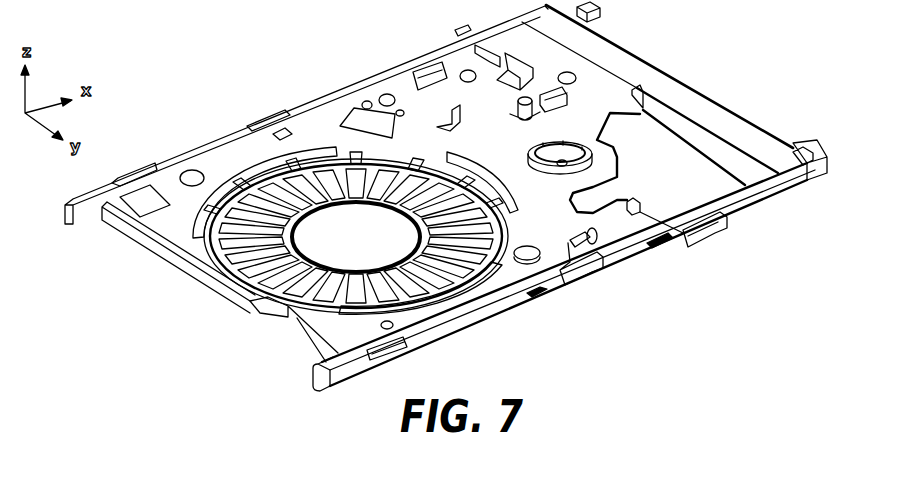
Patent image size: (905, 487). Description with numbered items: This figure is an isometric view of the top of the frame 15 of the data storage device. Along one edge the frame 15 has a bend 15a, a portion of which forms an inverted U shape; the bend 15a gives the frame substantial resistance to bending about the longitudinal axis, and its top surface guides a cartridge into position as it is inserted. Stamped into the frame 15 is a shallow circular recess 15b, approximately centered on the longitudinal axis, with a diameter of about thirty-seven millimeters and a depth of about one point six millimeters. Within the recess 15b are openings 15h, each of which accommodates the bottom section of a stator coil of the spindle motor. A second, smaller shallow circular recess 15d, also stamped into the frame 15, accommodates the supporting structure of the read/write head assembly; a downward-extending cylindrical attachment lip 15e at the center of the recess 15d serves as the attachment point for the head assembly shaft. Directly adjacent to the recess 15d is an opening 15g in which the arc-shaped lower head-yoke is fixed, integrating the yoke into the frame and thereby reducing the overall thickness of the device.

The frame 15 is at (274, 92).
The bend 15a is at (308, 334).
The shallow recess 15b is at (215, 252).
The shallow recess 15d is at (573, 140).
The cylindrical attachment lip 15e is at (561, 166).
The opening 15g is at (690, 167).
The opening 15h is at (252, 292).